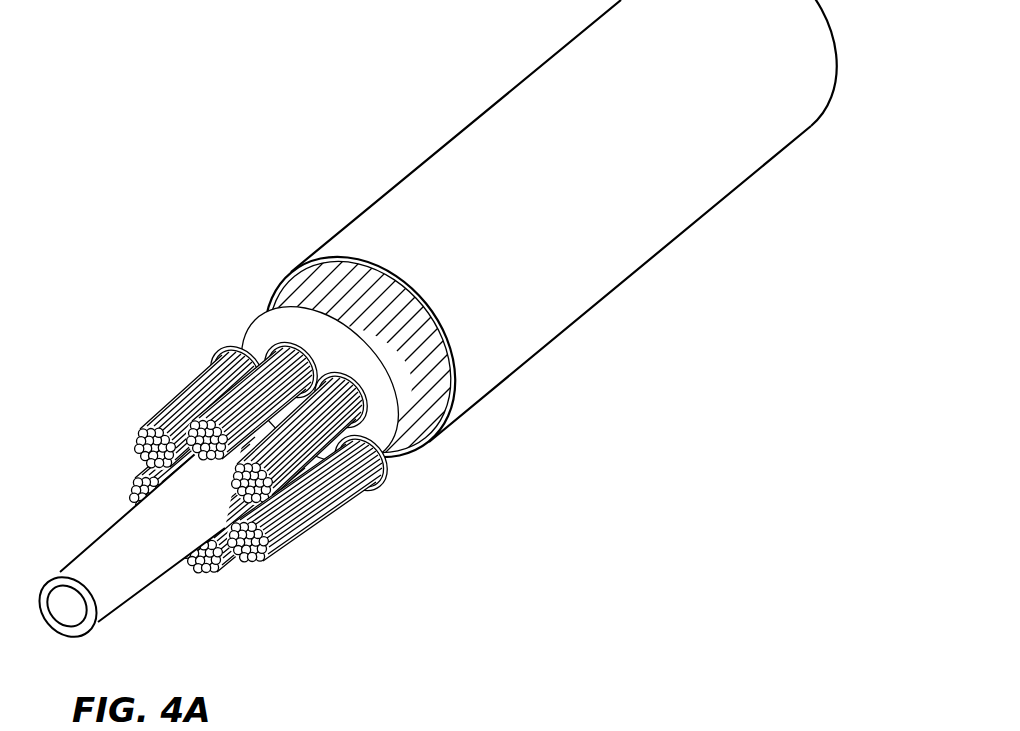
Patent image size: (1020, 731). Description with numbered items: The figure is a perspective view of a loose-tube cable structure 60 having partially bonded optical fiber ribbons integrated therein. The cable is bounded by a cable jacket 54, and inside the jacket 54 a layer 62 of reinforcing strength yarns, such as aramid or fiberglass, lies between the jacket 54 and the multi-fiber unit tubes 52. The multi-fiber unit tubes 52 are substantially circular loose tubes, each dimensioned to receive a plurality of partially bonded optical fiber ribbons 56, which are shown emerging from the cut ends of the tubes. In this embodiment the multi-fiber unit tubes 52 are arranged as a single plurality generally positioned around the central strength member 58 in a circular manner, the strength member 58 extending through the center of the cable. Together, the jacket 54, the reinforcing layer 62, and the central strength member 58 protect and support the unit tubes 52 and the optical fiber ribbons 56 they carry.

The loose-tube cable structure 60 is at (231, 123).
The layer of reinforcing strength yarns 62 is at (322, 295).
The cable jacket 54 is at (278, 290).
The multi-fiber unit tube 52 is at (243, 340).
The partially bonded optical fiber ribbon 56 is at (220, 489).
The central strength member 58 is at (123, 592).